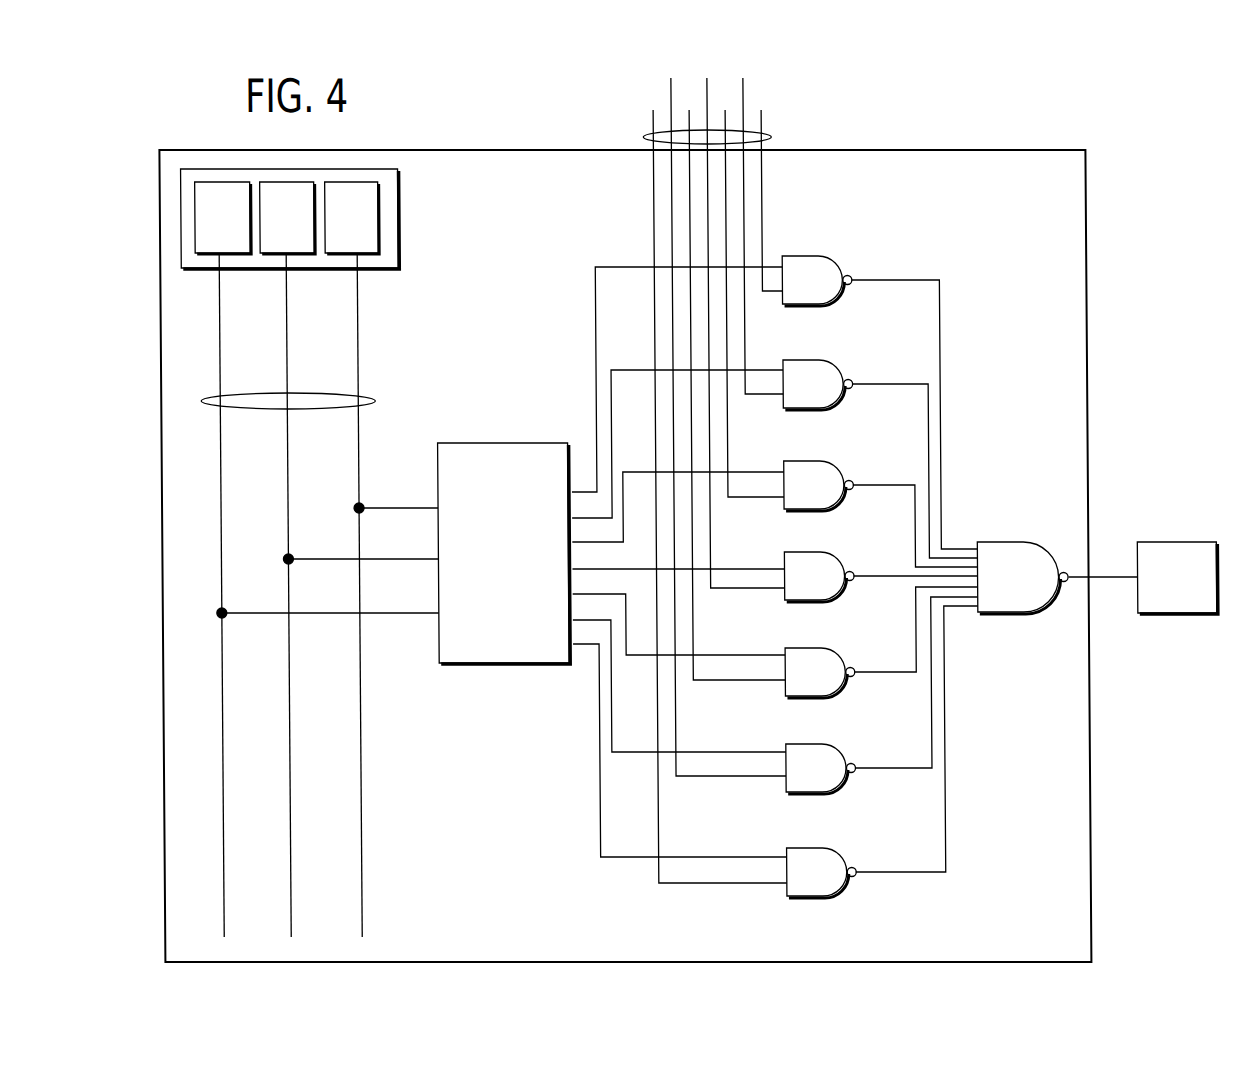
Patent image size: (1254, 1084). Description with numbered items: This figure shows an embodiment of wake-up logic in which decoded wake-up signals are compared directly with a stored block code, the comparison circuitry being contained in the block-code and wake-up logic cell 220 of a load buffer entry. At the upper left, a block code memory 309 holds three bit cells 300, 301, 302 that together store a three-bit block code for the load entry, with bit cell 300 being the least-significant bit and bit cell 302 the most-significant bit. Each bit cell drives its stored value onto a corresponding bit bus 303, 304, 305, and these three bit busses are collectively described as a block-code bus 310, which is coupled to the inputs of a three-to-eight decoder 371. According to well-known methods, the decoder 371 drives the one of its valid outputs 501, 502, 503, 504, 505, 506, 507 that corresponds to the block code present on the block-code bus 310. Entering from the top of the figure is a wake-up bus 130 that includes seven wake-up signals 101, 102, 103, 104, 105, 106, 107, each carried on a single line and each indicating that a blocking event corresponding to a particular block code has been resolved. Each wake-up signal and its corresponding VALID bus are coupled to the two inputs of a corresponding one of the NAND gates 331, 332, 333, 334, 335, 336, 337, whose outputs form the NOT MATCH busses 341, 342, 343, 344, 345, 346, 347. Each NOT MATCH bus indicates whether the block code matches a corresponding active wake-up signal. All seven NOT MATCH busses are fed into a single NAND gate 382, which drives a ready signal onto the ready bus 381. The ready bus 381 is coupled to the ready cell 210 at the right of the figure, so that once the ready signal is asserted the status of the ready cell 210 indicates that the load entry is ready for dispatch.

The wake-up signal 101 is at (764, 187).
The wake-up signal 102 is at (754, 223).
The wake-up signal 103 is at (745, 290).
The wake-up signal 104 is at (735, 320).
The wake-up signal 105 is at (728, 381).
The wake-up signal 106 is at (717, 414).
The wake-up signal 107 is at (709, 483).
The wake-up bus 130 is at (774, 137).
The ready cell 210 is at (1162, 605).
The block-code and wake-up logic cell 220 is at (1088, 805).
The bit cell 300 is at (338, 246).
The bit cell 301 is at (274, 246).
The bit cell 302 is at (209, 246).
The bit bus 303 is at (359, 310).
The bit bus 304 is at (288, 310).
The bit bus 305 is at (221, 310).
The block code memory 309 is at (400, 234).
The block-code bus 310 is at (376, 401).
The NAND gate 331 is at (795, 294).
The NAND gate 332 is at (795, 398).
The NAND gate 333 is at (795, 499).
The NAND gate 334 is at (795, 590).
The NAND gate 335 is at (795, 686).
The NAND gate 336 is at (795, 782).
The NAND gate 337 is at (795, 886).
The NOT MATCH bus 341 is at (891, 284).
The NOT MATCH bus 342 is at (893, 389).
The NOT MATCH bus 343 is at (893, 490).
The NOT MATCH bus 344 is at (893, 581).
The NOT MATCH bus 345 is at (897, 677).
The NOT MATCH bus 346 is at (897, 773).
The NOT MATCH bus 347 is at (897, 877).
The 3:8 decoder 371 is at (487, 599).
The ready bus 381 is at (1124, 582).
The NAND gate 382 is at (994, 591).
The valid output 501 is at (636, 265).
The valid output 502 is at (637, 368).
The valid output 503 is at (638, 470).
The valid output 504 is at (645, 569).
The valid output 505 is at (640, 659).
The valid output 506 is at (640, 756).
The valid output 507 is at (640, 861).